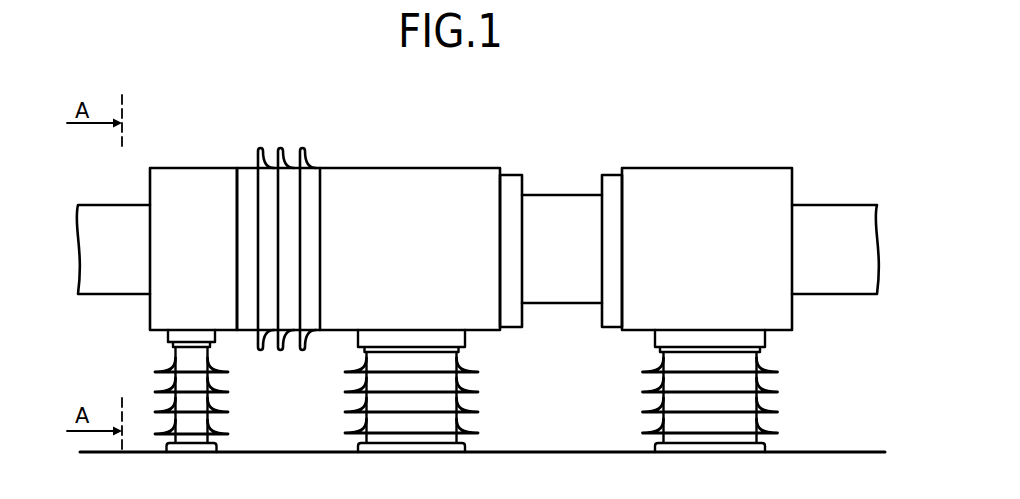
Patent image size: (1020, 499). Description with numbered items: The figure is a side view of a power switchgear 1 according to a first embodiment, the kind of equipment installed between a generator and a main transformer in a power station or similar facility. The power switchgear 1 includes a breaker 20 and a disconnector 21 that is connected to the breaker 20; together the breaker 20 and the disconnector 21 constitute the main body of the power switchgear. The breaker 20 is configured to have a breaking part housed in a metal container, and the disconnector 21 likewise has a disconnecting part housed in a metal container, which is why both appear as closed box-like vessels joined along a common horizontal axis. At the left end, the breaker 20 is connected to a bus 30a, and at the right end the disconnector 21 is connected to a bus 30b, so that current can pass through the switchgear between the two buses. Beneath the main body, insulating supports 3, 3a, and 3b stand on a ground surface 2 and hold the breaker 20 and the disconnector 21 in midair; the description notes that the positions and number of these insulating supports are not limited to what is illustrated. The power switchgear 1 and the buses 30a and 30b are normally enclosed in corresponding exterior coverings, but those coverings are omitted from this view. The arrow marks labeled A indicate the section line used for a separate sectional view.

The power switchgear 1 is at (412, 168).
The ground surface 2 is at (868, 452).
The insulating support 3 is at (170, 366).
The insulating support 3a is at (358, 366).
The insulating support 3b is at (656, 366).
The breaker 20 is at (195, 168).
The disconnector 21 is at (708, 168).
The bus 30a is at (88, 205).
The bus 30b is at (841, 205).